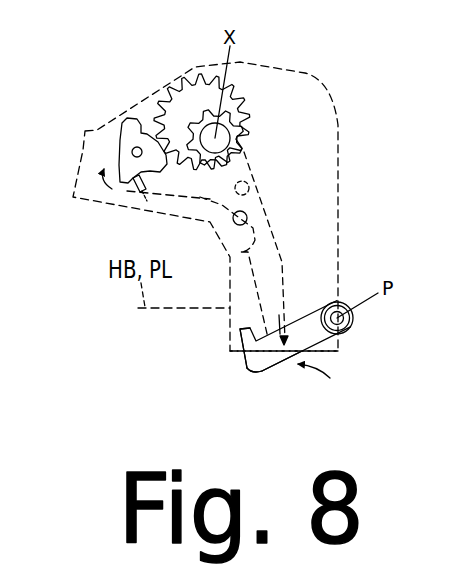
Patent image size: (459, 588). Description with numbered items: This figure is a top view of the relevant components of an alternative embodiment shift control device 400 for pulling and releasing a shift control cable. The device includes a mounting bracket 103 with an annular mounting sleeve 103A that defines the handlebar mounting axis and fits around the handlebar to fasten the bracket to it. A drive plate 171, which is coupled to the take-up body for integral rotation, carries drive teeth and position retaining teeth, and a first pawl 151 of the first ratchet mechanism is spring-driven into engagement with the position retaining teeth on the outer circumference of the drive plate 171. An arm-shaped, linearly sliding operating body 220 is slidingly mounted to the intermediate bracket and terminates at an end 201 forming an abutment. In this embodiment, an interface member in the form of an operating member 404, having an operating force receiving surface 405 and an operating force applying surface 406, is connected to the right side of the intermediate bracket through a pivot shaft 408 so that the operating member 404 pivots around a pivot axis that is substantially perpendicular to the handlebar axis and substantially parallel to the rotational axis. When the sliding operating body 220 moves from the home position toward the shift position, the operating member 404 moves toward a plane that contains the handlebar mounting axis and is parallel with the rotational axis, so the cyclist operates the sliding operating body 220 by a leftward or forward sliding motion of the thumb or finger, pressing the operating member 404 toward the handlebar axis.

The shift control device 400 is at (107, 99).
The mounting bracket 103 is at (293, 72).
The annular mounting sleeve 103A is at (238, 335).
The drive plate 171 is at (256, 118).
The first pawl 151 is at (119, 150).
The sliding operating body 220 is at (265, 208).
The operating force applying surface 406 is at (302, 317).
The pivot shaft 408 is at (352, 326).
The end 201 is at (246, 326).
The operating member 404 is at (262, 386).
The operating force receiving surface 405 is at (275, 366).